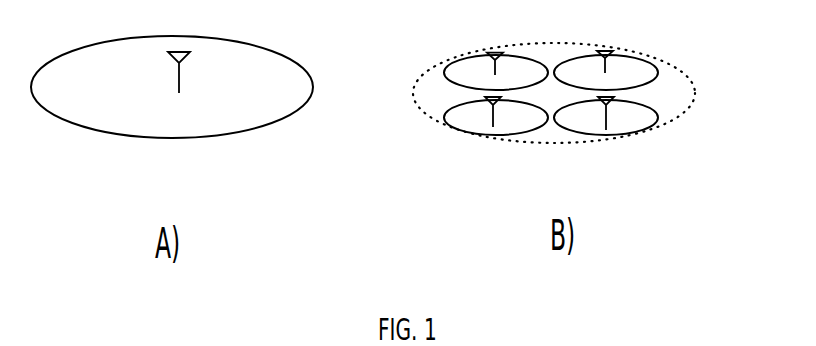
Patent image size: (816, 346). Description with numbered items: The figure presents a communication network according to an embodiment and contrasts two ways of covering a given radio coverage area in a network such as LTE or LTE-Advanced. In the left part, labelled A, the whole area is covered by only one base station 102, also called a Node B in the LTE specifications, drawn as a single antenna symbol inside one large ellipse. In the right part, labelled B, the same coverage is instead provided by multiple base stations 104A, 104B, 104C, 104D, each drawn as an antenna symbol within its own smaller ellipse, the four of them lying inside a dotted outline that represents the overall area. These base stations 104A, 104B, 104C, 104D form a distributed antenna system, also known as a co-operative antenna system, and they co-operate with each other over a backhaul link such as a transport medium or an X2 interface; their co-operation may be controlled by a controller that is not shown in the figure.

The base station 102 is at (179, 93).
The base station 104A is at (493, 127).
The base station 104B is at (495, 75).
The base station 104C is at (605, 73).
The base station 104D is at (606, 130).